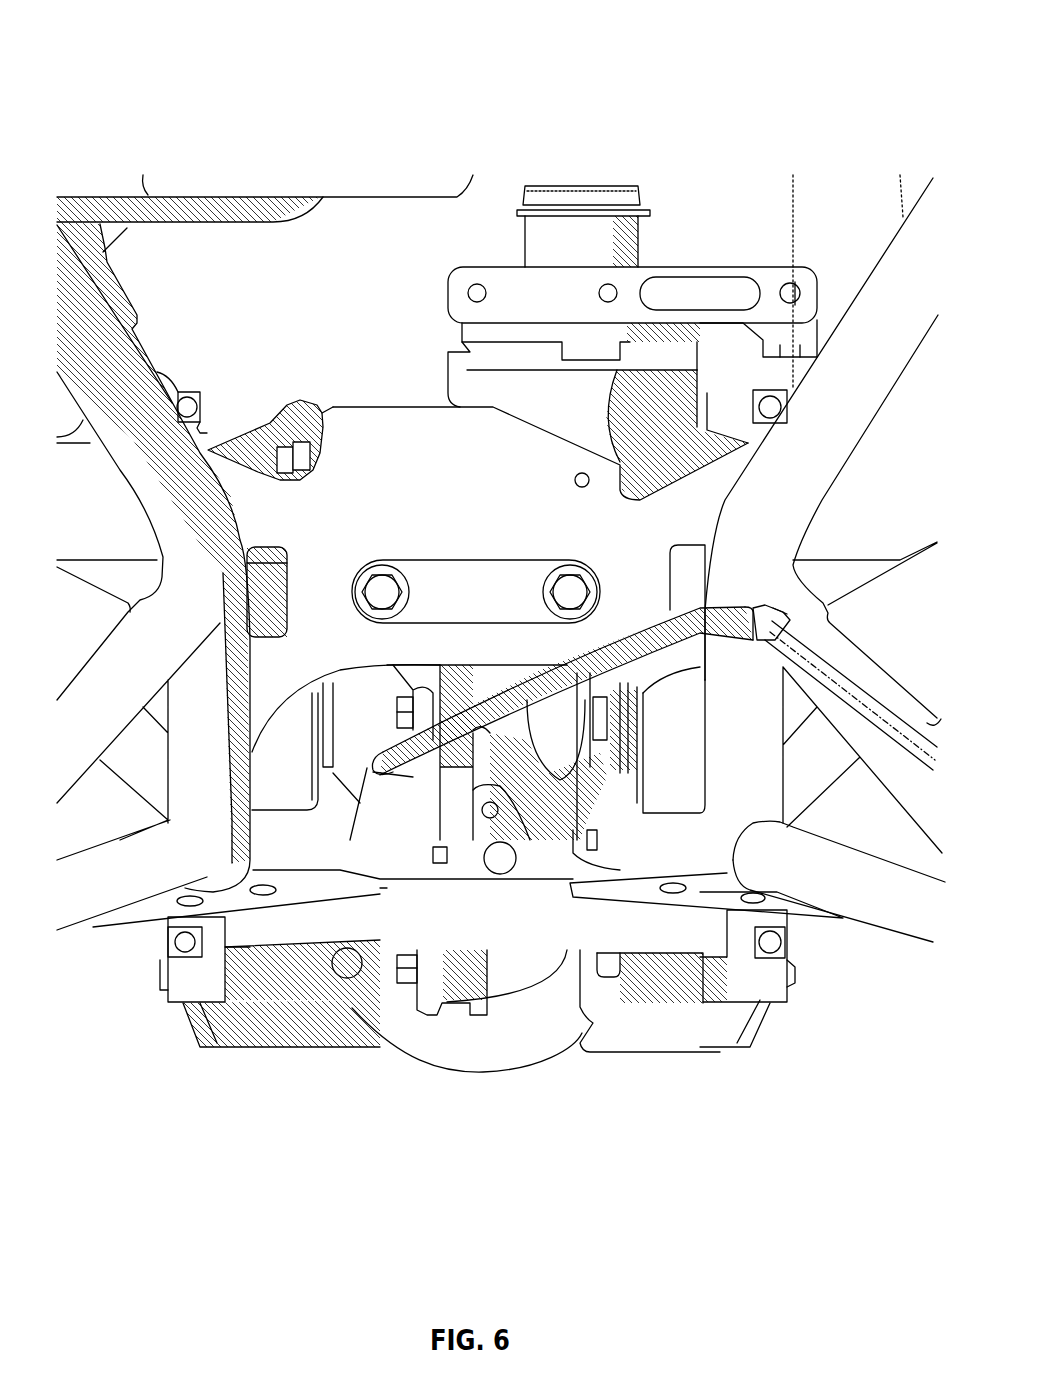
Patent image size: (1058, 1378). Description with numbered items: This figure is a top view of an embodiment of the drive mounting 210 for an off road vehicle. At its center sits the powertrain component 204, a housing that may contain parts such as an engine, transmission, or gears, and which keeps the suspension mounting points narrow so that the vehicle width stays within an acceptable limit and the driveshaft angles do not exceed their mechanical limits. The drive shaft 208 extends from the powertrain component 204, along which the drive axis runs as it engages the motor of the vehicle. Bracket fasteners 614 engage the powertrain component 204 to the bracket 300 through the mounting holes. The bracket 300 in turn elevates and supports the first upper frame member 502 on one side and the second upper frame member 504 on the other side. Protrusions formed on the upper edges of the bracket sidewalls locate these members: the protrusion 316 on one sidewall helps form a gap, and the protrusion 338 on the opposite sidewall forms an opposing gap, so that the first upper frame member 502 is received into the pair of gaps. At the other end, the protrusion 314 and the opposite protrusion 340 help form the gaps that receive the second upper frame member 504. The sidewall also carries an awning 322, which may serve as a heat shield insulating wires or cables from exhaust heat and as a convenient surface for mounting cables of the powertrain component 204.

The drive mounting 210 is at (517, 64).
The drive shaft 208 is at (637, 246).
The powertrain component 204 is at (578, 414).
The bracket 300 is at (385, 385).
The awning 322 is at (408, 478).
The protrusion 314 is at (723, 462).
The protrusion 316 is at (210, 450).
The bracket fasteners 614 is at (580, 583).
The protrusion 338 is at (270, 714).
The protrusion 340 is at (688, 704).
The first upper frame member 502 is at (215, 599).
The second upper frame member 504 is at (783, 553).